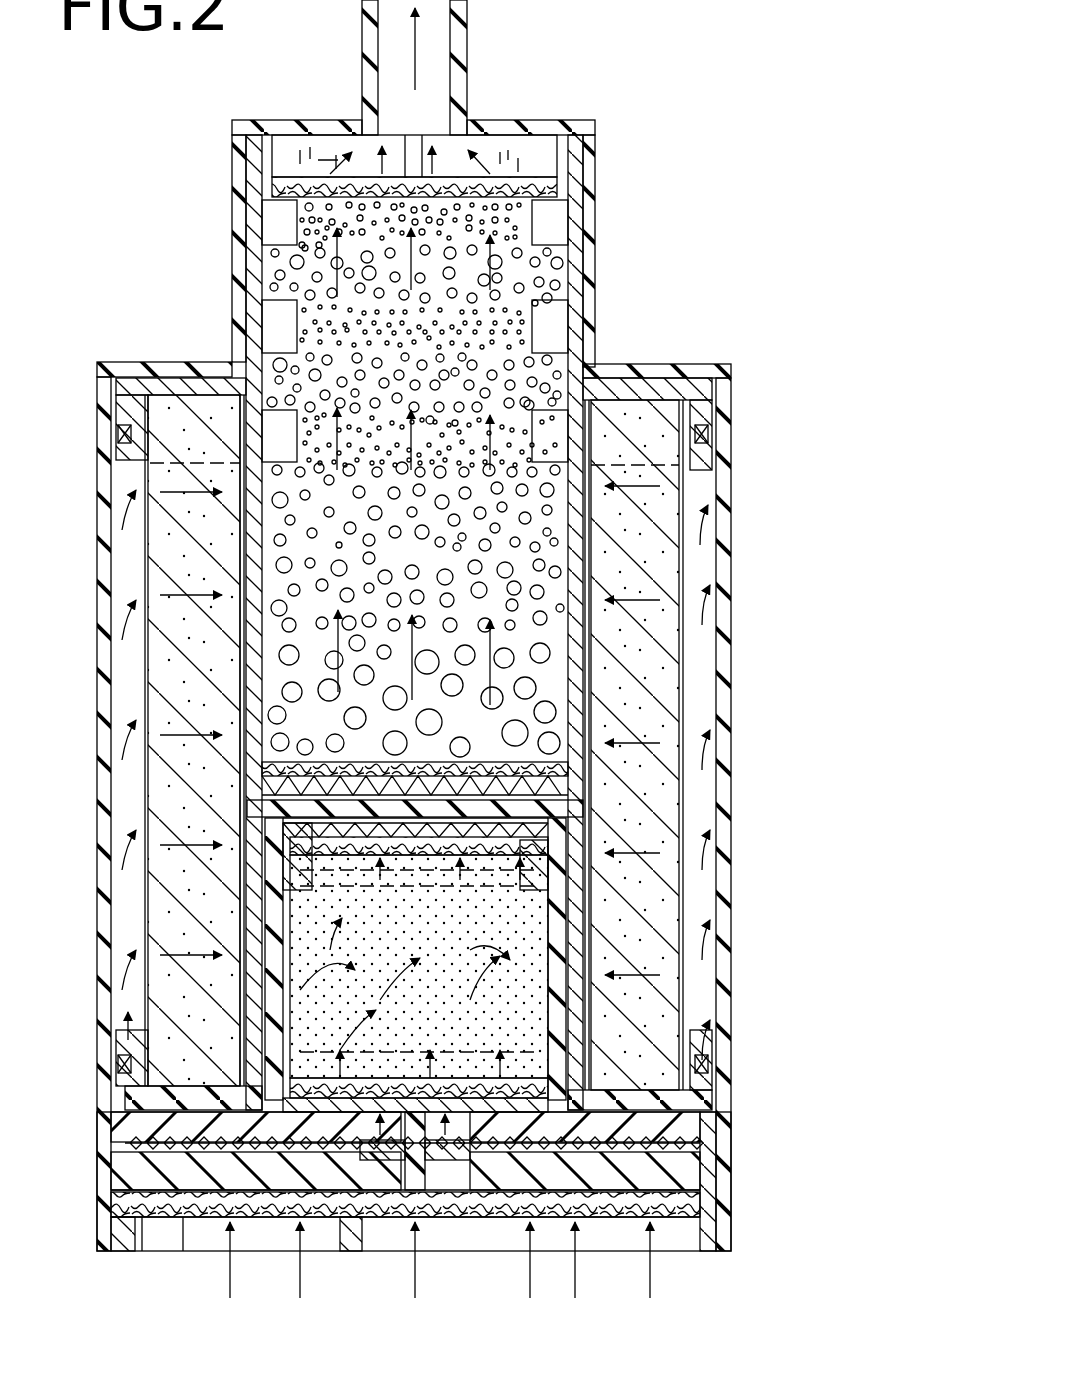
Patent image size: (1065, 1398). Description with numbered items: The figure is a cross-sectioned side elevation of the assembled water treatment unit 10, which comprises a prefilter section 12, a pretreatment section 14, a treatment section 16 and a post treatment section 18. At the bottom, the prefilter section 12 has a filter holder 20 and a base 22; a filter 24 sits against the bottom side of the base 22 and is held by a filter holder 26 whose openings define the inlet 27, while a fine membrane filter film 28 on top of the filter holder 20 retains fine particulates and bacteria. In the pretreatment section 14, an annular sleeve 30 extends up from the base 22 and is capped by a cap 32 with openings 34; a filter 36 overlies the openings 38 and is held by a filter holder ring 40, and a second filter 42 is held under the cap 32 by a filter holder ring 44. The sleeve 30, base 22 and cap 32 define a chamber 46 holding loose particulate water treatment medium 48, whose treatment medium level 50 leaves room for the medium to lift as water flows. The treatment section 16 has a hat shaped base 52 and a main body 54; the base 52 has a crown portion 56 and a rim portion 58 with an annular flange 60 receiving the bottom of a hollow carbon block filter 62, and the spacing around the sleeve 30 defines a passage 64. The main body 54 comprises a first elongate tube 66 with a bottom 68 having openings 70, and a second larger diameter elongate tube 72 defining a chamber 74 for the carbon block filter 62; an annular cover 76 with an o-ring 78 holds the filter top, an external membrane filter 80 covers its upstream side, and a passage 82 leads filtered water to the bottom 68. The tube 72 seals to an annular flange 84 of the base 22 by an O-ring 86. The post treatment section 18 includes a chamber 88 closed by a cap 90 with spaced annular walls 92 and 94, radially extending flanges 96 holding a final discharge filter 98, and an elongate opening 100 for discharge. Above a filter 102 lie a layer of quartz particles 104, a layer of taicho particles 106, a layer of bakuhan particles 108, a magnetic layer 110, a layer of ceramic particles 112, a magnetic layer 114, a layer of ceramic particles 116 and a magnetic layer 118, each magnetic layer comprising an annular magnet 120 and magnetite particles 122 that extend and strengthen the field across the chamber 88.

The water treatment unit 10 is at (668, 124).
The prefilter section 12 is at (88, 1115).
The pretreatment section 14 is at (288, 900).
The treatment section 16 is at (124, 798).
The post treatment section 18 is at (349, 375).
The filter holder 20 is at (705, 1180).
The base 22 is at (705, 1125).
The filter 24 is at (705, 1212).
The filter holder 26 is at (698, 1250).
The inlet 27 is at (541, 1240).
The fine membrane filter film 28 is at (705, 1150).
The annular sleeve 30 is at (270, 968).
The cap 32 is at (555, 820).
The openings 34 is at (460, 769).
The filter 36 is at (546, 1059).
The openings 38 is at (468, 1164).
The filter holder ring 40 is at (554, 1017).
The second filter 42 is at (548, 846).
The filter holder ring 44 is at (585, 873).
The chamber 46 is at (592, 959).
The loose particulate water treatment medium 48 is at (600, 986).
The treatment medium level 50 is at (344, 956).
The hat shaped base 52 is at (598, 895).
The main body 54 is at (736, 795).
The crown portion 56 is at (262, 886).
The rim portion 58 is at (186, 1085).
The annular flange 60 is at (127, 1060).
The hollow carbon block filter 62 is at (150, 760).
The passage 64 is at (570, 927).
The first elongate tube 66 is at (586, 637).
The bottom 68 is at (398, 769).
The openings 70 is at (310, 769).
The second larger diameter elongate tube 72 is at (722, 682).
The chamber 74 is at (125, 735).
The annular cover 76 is at (100, 380).
The o-ring 78 is at (705, 438).
The external membrane filter 80 is at (150, 670).
The passage 82 is at (240, 822).
The annular flange 84 is at (717, 1100).
The O-ring 86 is at (702, 1076).
The chamber 88 is at (430, 565).
The cap 90 is at (538, 120).
The annular wall 92 is at (233, 167).
The annular wall 94 is at (260, 154).
The radially extending flanges 96 is at (406, 145).
The final discharge filter 98 is at (574, 150).
The elongate opening 100 is at (458, 27).
The filter 102 is at (586, 772).
The layer of quartz particles 104 is at (542, 727).
The layer of taicho particles 106 is at (532, 572).
The layer of bakuhan particles 108 is at (552, 497).
The magnetic layer 110 is at (90, 405).
The layer of ceramic particles 112 is at (595, 362).
The magnetic layer 114 is at (220, 300).
The layer of ceramic particles 116 is at (560, 268).
The magnetic layer 118 is at (222, 197).
The annular magnet 120 is at (568, 231).
The magnetite particles 122 is at (545, 215).